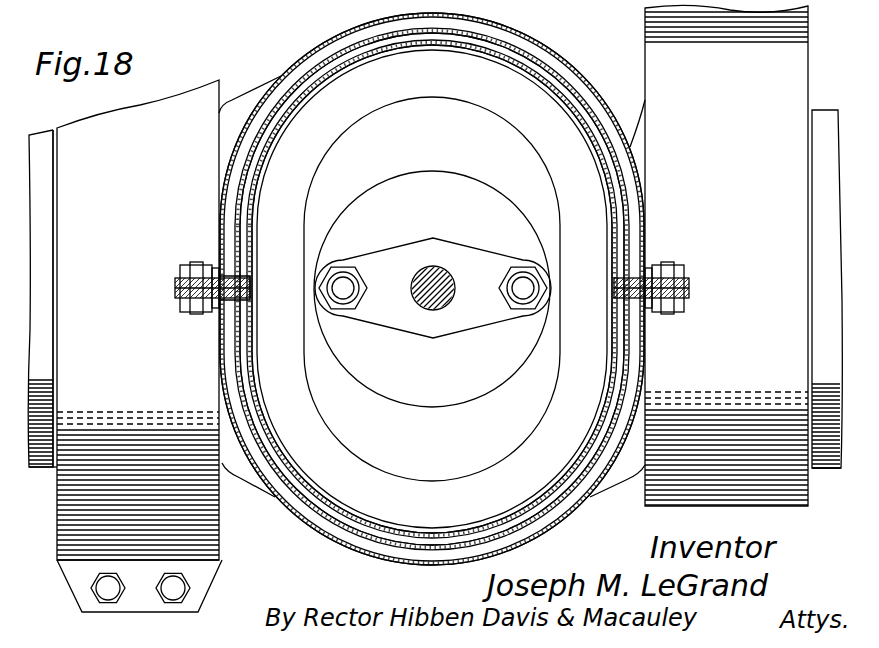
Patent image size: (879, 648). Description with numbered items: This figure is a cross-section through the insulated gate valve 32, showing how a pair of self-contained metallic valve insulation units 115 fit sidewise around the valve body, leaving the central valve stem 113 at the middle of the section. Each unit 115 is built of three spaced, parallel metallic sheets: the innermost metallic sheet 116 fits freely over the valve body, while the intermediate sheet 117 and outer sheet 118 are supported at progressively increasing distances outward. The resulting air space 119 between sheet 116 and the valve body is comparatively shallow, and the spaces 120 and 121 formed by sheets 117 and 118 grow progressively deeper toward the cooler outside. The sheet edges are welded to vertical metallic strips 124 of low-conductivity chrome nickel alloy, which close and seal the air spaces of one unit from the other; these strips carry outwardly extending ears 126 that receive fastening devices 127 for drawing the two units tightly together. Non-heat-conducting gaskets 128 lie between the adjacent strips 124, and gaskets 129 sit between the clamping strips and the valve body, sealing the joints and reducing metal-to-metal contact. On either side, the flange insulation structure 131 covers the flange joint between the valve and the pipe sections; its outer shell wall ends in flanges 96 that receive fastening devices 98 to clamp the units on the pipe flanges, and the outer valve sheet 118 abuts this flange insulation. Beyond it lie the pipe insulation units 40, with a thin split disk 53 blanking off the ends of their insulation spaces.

The valve 32 is at (316, 443).
The pipe insulation unit 40 is at (42, 150).
The disk 53 is at (57, 467).
The flange 96 is at (82, 578).
The fastening device 98 is at (173, 600).
The valve stem 113 is at (429, 266).
The valve insulation unit 115 is at (592, 62).
The innermost metallic sheet 116 is at (308, 77).
The intermediate metallic sheet 117 is at (327, 58).
The outer metallic sheet 118 is at (363, 22).
The inner air space 119 is at (330, 485).
The intermediate air space 120 is at (352, 518).
The outer air space 121 is at (372, 542).
The vertical metallic strip 124 is at (634, 275).
The ear 126 is at (180, 270).
The fastening device 127 is at (201, 313).
The gasket 128 is at (176, 290).
The gasket 129 is at (228, 300).
The flange insulation structure 131 is at (95, 140).